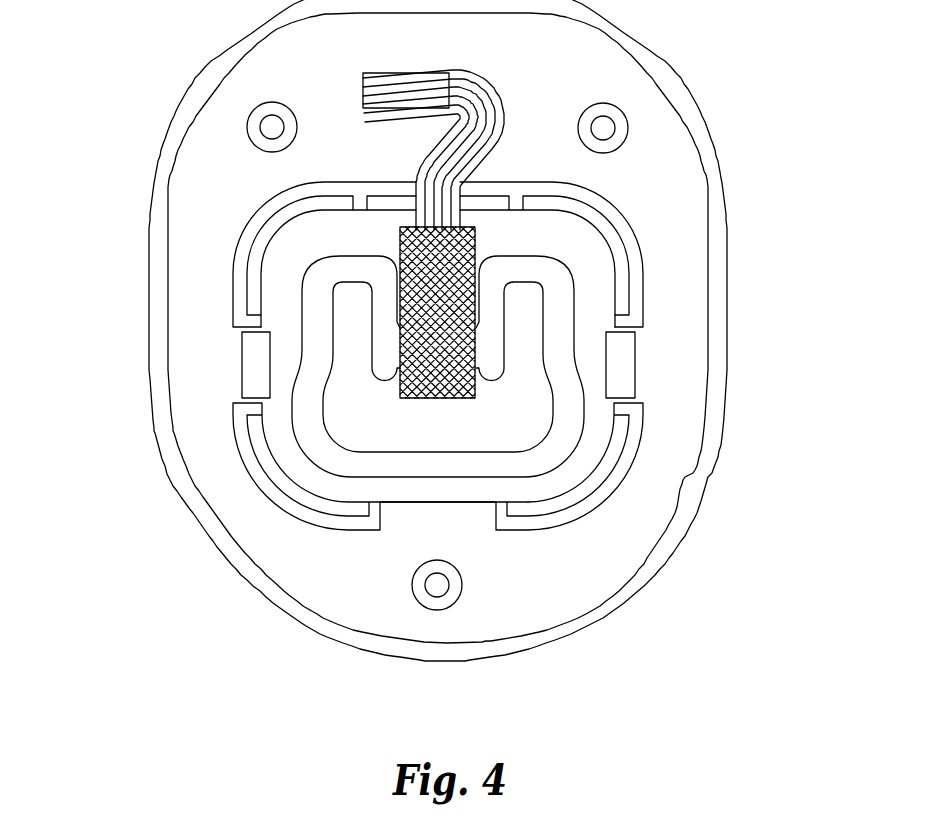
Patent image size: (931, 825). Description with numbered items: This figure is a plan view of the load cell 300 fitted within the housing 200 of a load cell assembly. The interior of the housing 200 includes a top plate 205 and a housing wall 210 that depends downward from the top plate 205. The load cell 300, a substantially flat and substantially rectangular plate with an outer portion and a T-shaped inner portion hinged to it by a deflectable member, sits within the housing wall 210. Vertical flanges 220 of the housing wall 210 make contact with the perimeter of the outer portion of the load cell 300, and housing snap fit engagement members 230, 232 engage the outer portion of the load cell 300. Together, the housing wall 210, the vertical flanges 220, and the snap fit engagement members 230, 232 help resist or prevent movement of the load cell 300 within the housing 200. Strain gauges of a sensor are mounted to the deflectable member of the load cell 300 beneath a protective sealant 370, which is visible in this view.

The housing 200 is at (729, 204).
The top plate 205 is at (230, 165).
The housing wall 210 is at (643, 288).
The vertical flanges 220 is at (373, 510).
The housing snap fit engagement member 230 is at (623, 363).
The housing snap fit engagement member 232 is at (253, 363).
The load cell 300 is at (573, 238).
The protective sealant 370 is at (423, 303).